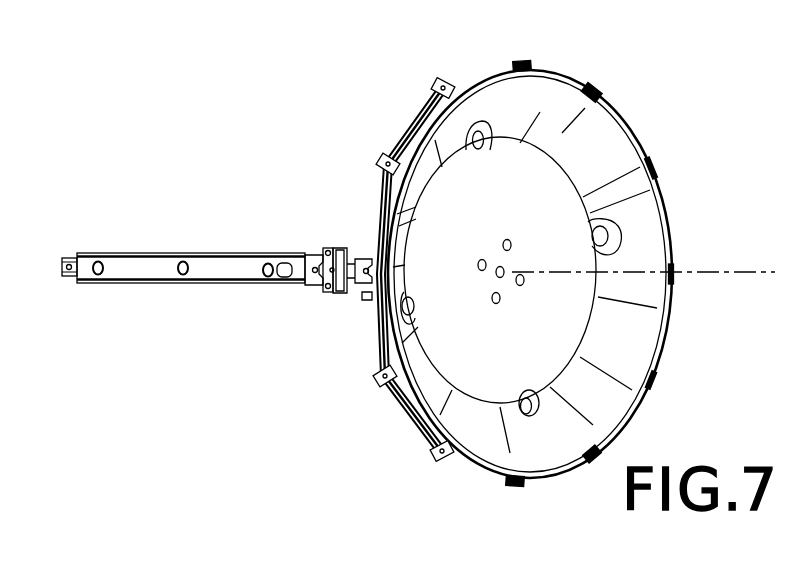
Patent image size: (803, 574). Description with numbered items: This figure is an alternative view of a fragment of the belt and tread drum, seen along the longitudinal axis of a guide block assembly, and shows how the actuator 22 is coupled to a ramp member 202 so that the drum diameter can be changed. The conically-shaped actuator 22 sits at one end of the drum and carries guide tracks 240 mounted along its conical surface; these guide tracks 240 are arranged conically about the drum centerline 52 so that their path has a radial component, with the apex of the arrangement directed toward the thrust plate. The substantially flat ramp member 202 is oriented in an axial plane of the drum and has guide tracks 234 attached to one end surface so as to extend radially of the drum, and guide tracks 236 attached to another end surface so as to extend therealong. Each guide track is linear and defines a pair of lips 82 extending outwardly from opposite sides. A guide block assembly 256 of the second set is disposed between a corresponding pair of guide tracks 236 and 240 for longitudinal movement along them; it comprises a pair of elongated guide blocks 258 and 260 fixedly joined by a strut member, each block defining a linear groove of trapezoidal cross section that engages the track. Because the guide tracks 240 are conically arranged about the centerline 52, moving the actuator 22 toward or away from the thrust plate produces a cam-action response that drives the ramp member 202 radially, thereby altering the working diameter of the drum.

The actuator 22 is at (630, 132).
The centerline 52 is at (750, 274).
The guide tracks 240 is at (437, 86).
The lips 82 is at (357, 250).
The ramp member 202 is at (209, 252).
The guide tracks 234 is at (64, 265).
The guide tracks 236 is at (308, 285).
The guide block 260 is at (316, 294).
The guide block assembly 256 is at (327, 295).
The guide block 258 is at (360, 300).